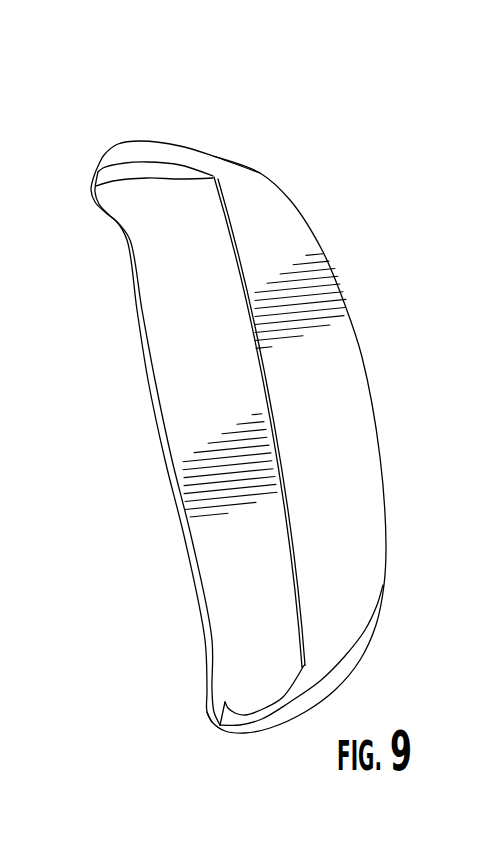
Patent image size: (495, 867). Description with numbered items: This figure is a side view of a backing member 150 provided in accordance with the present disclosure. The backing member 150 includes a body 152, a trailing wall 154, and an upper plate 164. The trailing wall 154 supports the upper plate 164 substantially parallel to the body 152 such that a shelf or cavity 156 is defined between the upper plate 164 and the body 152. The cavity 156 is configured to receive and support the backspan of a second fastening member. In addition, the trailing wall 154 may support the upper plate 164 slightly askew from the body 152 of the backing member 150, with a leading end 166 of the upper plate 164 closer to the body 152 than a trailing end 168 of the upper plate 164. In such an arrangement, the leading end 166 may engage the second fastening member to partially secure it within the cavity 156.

The backing member 150 is at (330, 188).
The body 152 is at (203, 375).
The trailing wall 154 is at (162, 150).
The cavity 156 is at (240, 288).
The upper plate 164 is at (317, 417).
The leading end 166 is at (228, 235).
The trailing end 168 is at (379, 455).